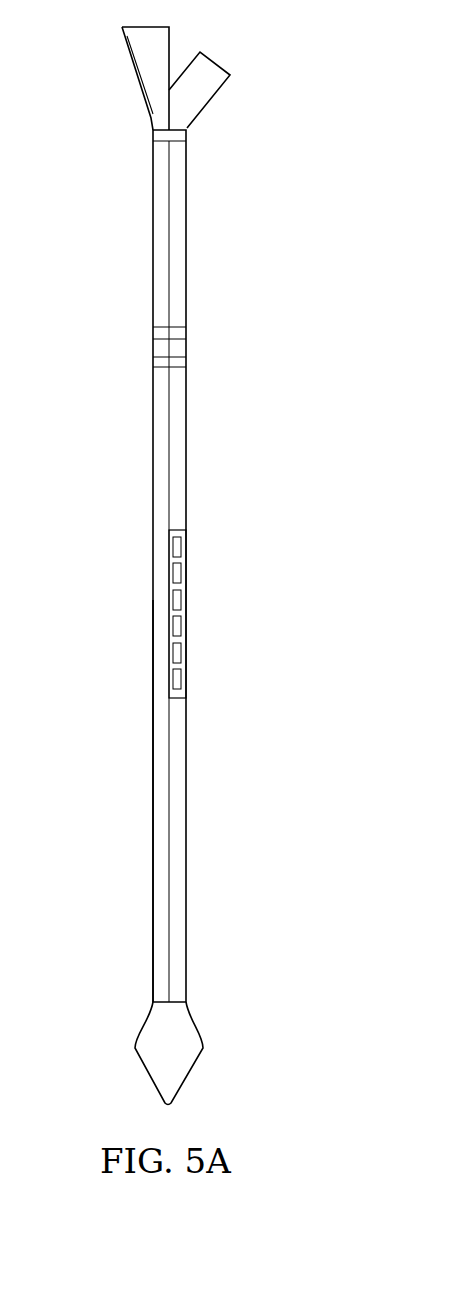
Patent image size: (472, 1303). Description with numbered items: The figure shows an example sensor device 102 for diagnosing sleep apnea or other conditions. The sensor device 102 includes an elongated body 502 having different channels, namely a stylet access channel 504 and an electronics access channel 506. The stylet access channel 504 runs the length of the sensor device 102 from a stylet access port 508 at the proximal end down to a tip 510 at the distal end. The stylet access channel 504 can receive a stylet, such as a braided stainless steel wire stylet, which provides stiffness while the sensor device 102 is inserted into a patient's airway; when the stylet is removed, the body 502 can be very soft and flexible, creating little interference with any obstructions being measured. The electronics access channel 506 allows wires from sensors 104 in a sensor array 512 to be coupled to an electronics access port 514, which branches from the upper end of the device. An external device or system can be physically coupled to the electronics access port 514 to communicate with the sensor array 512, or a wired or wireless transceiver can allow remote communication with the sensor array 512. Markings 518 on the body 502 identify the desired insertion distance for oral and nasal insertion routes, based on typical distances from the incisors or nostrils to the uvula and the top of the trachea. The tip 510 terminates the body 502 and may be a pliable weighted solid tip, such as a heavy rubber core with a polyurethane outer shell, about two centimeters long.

The sensor device 102 is at (196, 571).
The sensors 104 is at (182, 650).
The elongated body 502 is at (150, 477).
The stylet access channel 504 is at (160, 802).
The electronics access channel 506 is at (177, 878).
The stylet access port 508 is at (137, 80).
The tip 510 is at (150, 1077).
The sensor array 512 is at (223, 614).
The electronics access port 514 is at (208, 102).
The markings 518 is at (162, 333).